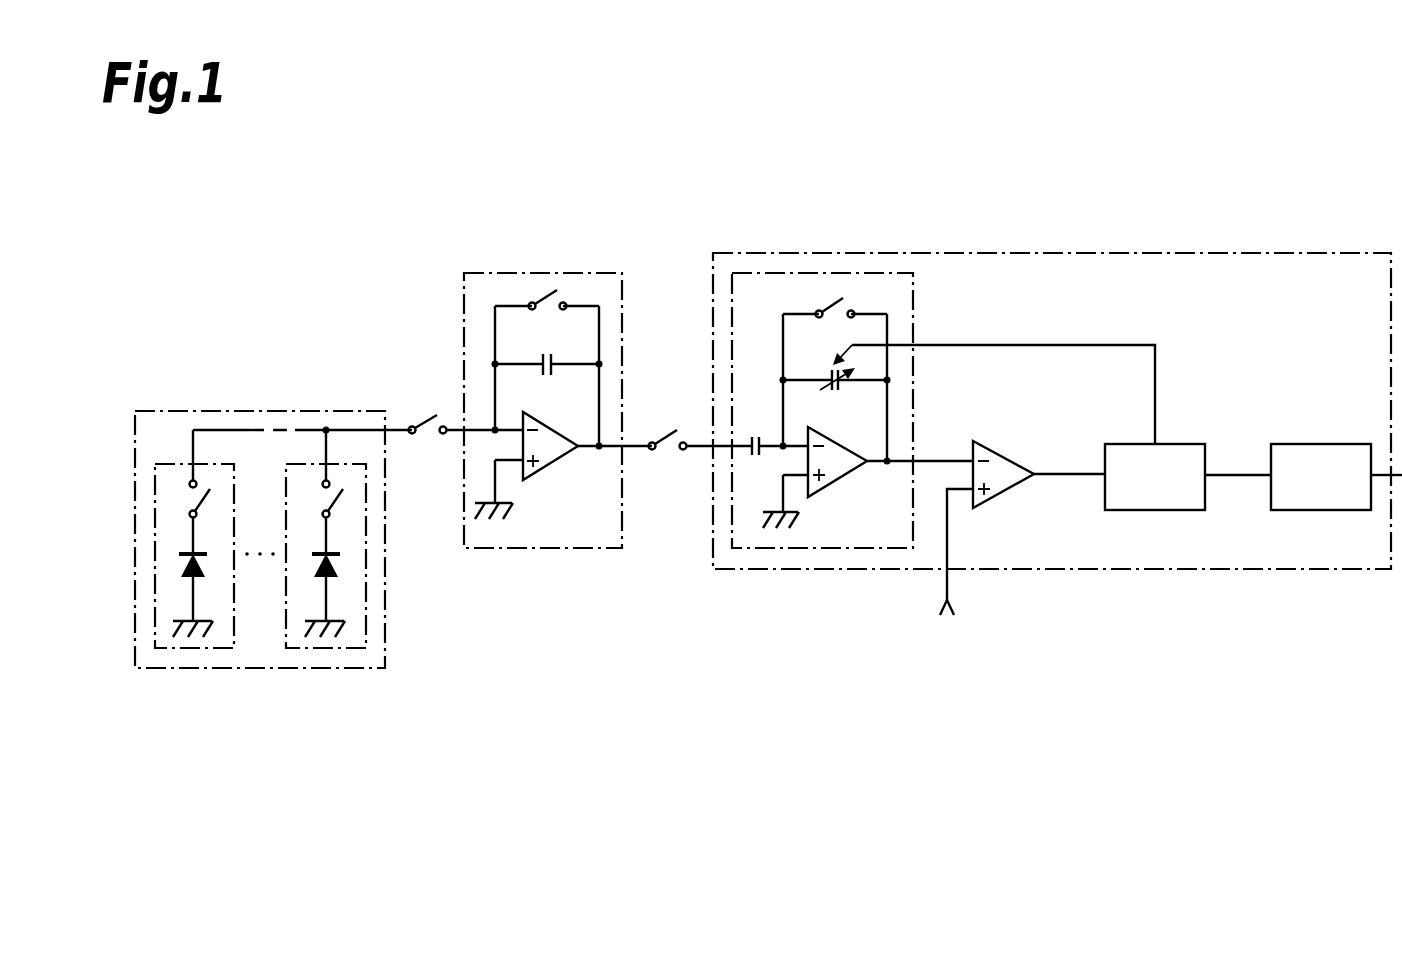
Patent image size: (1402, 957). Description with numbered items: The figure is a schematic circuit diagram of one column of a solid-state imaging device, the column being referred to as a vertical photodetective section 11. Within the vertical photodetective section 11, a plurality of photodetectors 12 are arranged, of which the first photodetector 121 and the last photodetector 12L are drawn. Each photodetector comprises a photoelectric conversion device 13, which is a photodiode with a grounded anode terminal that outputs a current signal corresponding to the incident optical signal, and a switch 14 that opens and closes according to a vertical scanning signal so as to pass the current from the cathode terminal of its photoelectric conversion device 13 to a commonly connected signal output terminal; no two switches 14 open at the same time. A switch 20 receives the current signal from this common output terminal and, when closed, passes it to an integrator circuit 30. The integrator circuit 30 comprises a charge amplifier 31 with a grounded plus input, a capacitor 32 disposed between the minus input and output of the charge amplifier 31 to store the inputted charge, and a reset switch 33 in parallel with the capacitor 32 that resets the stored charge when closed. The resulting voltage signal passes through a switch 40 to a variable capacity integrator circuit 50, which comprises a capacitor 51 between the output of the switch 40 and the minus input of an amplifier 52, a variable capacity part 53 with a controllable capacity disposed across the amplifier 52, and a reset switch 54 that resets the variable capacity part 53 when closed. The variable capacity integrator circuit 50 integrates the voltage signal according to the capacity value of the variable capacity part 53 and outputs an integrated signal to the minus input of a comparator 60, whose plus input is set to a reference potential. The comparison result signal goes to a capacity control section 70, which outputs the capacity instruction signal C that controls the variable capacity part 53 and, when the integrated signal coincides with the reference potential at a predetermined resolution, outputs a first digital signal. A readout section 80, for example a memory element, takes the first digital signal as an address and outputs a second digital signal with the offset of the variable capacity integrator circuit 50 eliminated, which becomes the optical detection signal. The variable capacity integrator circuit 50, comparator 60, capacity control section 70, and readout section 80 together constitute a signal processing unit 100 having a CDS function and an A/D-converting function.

The vertical photodetective section 11 is at (248, 405).
The photodetector 12 is at (260, 614).
The first photodetector 121 is at (190, 650).
The L-th photodetector 12L is at (323, 650).
The photoelectric conversion device 13 is at (183, 566).
The switch 14 is at (185, 502).
The switch 20 is at (427, 415).
The integrator circuit 30 is at (543, 262).
The charge amplifier 31 is at (545, 470).
The capacitor 32 is at (550, 385).
The reset switch 33 is at (550, 318).
The switch 40 is at (668, 453).
The variable capacity integrator circuit 50 is at (787, 550).
The capacitor 51 is at (758, 430).
The amplifier 52 is at (835, 485).
The variable capacity part 53 is at (835, 400).
The reset switch 54 is at (820, 300).
The comparator 60 is at (1003, 498).
The capacity control section 70 is at (1145, 512).
The readout section 80 is at (1325, 512).
The signal processing unit 100 is at (1080, 248).